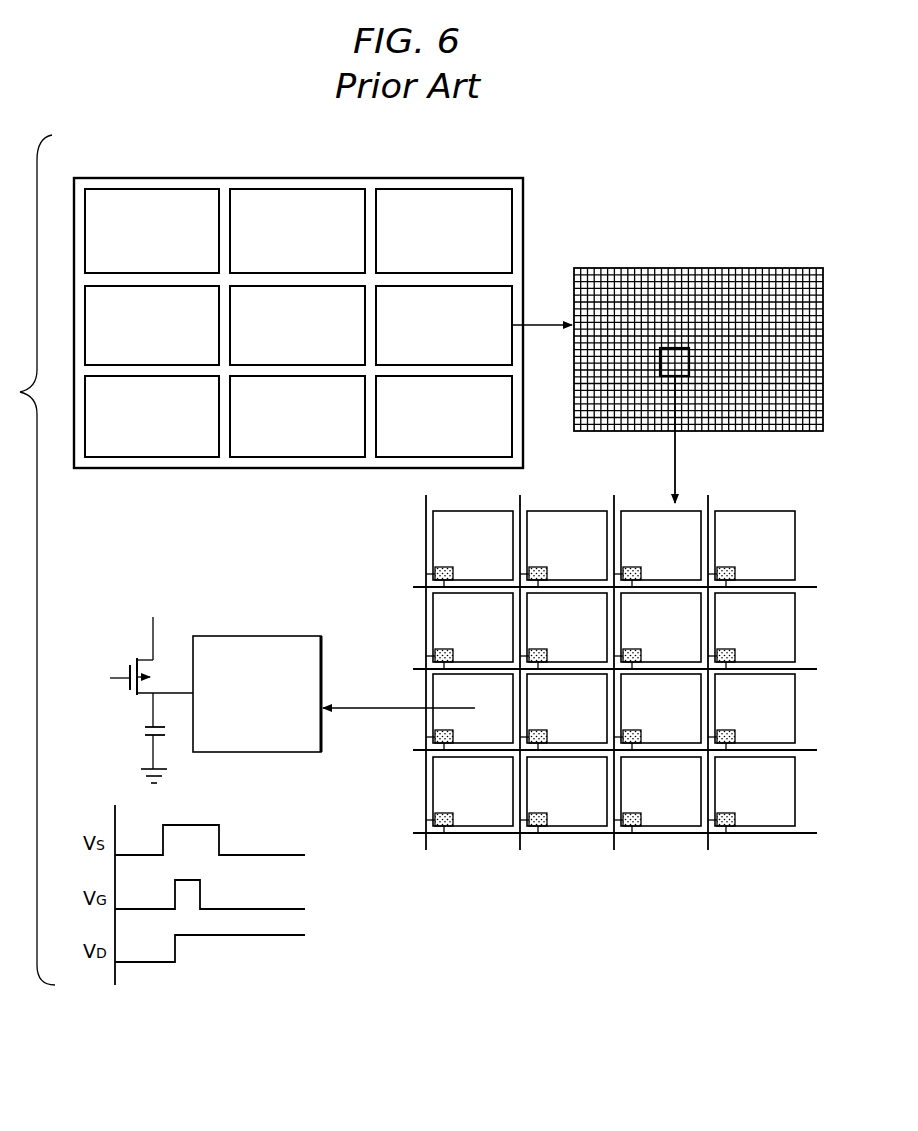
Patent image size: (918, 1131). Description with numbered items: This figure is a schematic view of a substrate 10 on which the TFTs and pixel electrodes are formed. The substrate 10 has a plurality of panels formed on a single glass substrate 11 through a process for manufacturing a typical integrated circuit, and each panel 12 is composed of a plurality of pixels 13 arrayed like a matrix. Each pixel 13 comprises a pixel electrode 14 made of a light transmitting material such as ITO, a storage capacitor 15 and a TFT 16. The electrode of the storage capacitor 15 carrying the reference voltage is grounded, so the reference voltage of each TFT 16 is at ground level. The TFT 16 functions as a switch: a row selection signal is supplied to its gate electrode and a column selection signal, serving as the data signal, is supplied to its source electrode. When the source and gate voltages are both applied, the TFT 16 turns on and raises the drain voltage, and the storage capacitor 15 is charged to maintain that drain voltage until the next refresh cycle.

The substrate 10 is at (118, 175).
The glass substrate 11 is at (145, 180).
The panel 12 is at (150, 188).
The pixel 13 is at (440, 613).
The pixel electrode 14 is at (468, 518).
The storage capacitor 15 is at (145, 741).
The TFT 16 is at (123, 696).